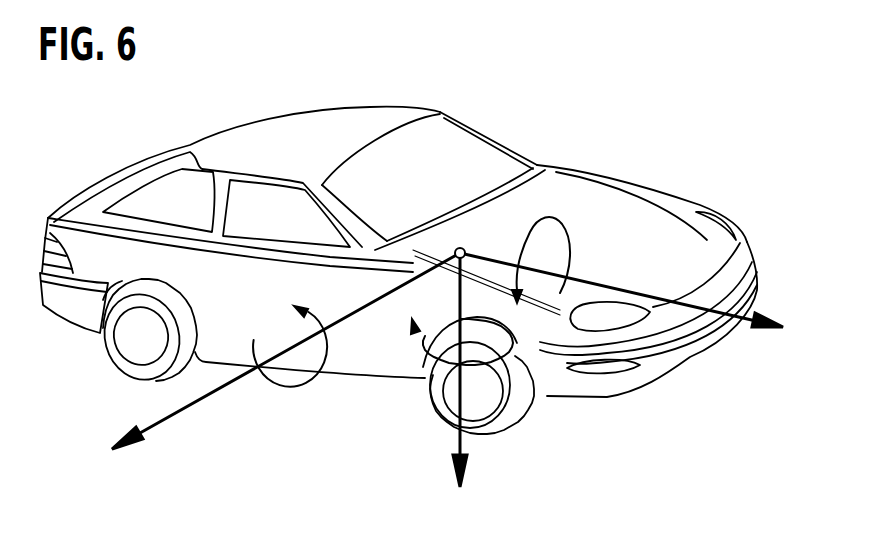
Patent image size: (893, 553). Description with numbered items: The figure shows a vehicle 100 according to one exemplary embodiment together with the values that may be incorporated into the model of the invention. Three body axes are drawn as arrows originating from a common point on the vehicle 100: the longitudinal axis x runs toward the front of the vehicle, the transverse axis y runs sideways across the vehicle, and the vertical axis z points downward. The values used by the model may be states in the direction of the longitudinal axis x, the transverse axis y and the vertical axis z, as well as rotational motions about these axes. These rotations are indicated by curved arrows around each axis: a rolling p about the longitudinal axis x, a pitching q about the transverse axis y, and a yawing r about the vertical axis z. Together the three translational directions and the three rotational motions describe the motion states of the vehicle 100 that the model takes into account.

The vehicle 100 is at (400, 108).
The longitudinal axis x is at (633, 295).
The transverse axis y is at (273, 357).
The vertical axis z is at (460, 383).
The rolling p is at (541, 260).
The pitching q is at (290, 346).
The yawing r is at (462, 328).